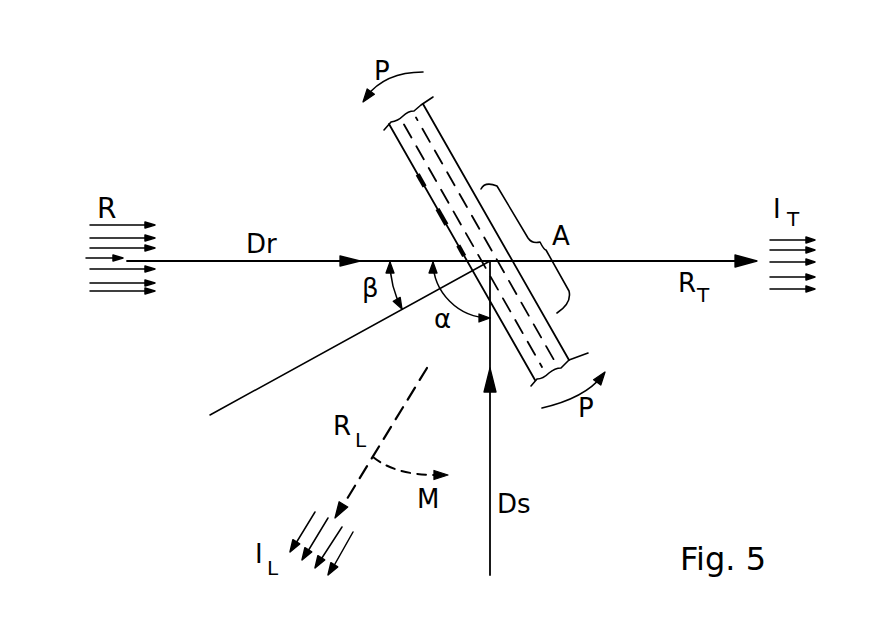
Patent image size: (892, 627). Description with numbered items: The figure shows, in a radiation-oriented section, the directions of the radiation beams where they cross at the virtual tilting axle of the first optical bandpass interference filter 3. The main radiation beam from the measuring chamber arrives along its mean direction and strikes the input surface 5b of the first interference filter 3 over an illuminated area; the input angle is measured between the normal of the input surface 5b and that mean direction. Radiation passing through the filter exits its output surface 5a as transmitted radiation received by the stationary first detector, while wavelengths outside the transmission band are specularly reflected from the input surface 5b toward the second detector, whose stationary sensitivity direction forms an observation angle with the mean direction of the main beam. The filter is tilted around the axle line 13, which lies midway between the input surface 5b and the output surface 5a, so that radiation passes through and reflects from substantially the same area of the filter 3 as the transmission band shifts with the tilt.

The first optical bandpass interference filter 3 is at (486, 241).
The output surface 5a is at (557, 332).
The input surface 5b is at (400, 150).
The axle line 13 is at (476, 250).